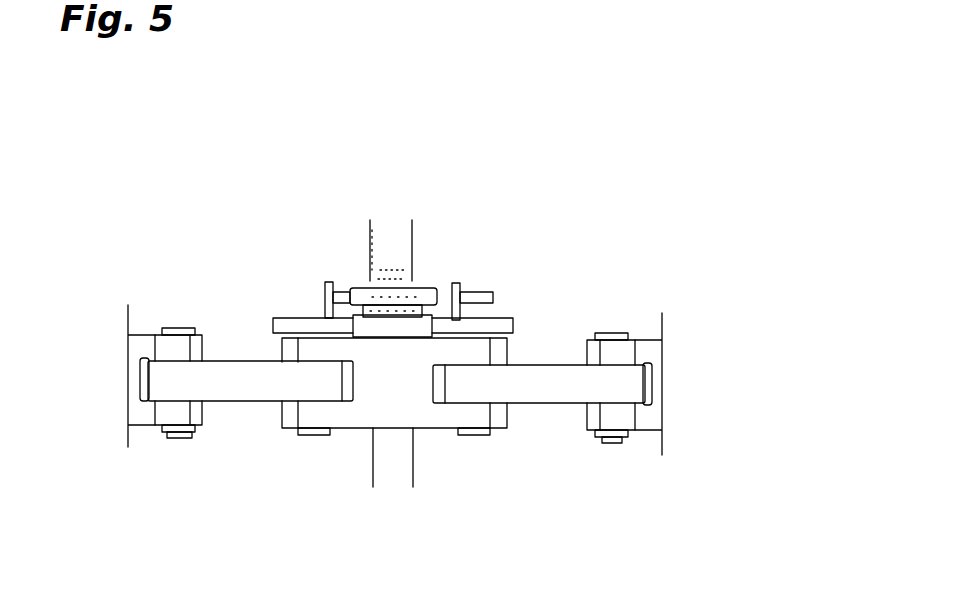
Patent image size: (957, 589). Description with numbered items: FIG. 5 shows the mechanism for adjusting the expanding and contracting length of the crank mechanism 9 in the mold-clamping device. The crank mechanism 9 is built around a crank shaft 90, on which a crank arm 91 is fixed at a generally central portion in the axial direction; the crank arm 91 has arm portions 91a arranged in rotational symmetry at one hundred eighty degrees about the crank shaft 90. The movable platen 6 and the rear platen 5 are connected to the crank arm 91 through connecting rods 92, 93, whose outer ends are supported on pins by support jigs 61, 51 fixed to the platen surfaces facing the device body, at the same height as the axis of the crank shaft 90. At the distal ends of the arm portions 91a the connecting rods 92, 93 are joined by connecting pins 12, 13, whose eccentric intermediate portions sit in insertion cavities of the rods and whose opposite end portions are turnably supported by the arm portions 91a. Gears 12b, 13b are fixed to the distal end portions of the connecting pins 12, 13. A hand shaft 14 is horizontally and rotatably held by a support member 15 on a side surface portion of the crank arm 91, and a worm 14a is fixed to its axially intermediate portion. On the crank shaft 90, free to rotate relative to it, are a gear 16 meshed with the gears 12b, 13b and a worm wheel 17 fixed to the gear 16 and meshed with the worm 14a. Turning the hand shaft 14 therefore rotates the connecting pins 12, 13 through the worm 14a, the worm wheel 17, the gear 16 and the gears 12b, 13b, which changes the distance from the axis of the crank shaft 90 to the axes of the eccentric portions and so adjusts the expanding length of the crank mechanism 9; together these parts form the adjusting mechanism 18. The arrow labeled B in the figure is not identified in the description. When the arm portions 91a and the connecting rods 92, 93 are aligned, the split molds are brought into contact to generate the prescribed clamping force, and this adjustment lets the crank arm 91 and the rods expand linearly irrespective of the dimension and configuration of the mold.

The crank mechanism 9 is at (388, 150).
The blasting medium B is at (390, 253).
The mechanism for adjusting the expanding length 18 is at (350, 237).
The worm wheel 17 is at (353, 281).
The gear 16 is at (422, 322).
The support member 15 is at (322, 278).
The hand shaft 14 is at (497, 287).
The worm gear 14a is at (398, 273).
The gear 12b is at (270, 312).
The gear 13b is at (517, 317).
The crank arm 91 is at (368, 418).
The arm portions 91a is at (283, 430).
The connecting pin 12 is at (312, 437).
The connecting pin 13 is at (480, 438).
The crank shaft 90 is at (415, 448).
The connecting rod 92 is at (230, 370).
The connecting rod 93 is at (540, 377).
The movable platen 6 is at (117, 375).
The support jig 61 is at (140, 410).
The rear platen 5 is at (690, 397).
The support jig 51 is at (648, 422).